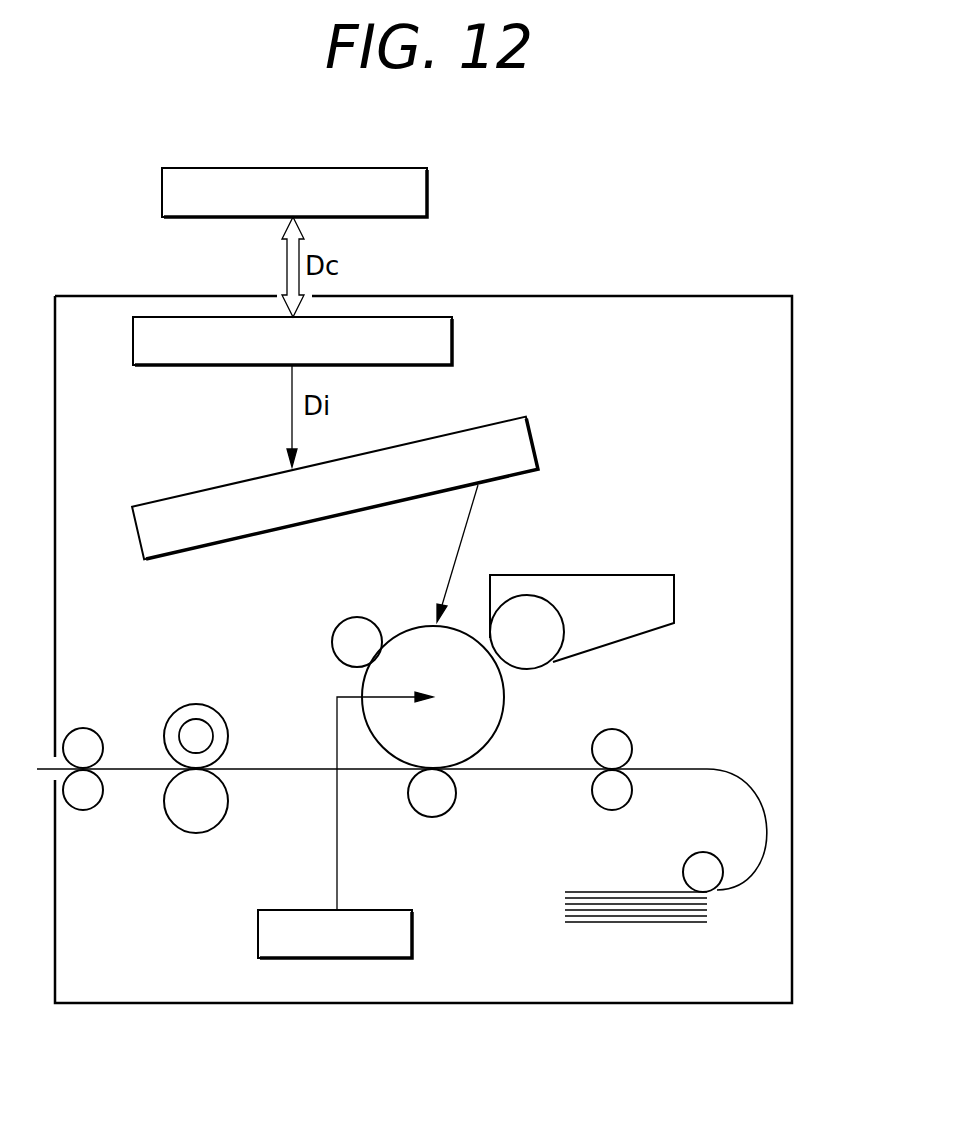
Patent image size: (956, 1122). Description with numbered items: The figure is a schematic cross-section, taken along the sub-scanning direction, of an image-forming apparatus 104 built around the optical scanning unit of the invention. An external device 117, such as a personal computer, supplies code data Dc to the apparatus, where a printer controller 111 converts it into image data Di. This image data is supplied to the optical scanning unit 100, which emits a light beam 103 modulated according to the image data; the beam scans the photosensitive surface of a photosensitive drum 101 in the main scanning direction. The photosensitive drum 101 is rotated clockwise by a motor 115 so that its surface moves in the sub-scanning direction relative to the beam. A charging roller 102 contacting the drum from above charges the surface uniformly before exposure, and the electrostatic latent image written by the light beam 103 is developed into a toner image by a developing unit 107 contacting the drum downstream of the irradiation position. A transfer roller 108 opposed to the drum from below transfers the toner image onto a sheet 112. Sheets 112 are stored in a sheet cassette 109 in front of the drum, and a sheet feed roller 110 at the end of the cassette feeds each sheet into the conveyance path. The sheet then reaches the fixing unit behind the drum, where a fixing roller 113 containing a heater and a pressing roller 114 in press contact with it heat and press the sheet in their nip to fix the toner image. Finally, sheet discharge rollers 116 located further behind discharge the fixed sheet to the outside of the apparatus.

The optical scanning unit 100 is at (185, 495).
The photosensitive drum 101 is at (493, 713).
The charging roller 102 is at (350, 622).
The light beam 103 is at (463, 537).
The image-forming apparatus 104 is at (587, 295).
The developing unit 107 is at (610, 582).
The transfer roller 108 is at (450, 793).
The sheet cassette 109 is at (630, 922).
The sheet feed roller 110 is at (707, 853).
The printer controller 111 is at (452, 341).
The sheet 112 is at (305, 767).
The fixing roller 113 is at (207, 710).
The pressing roller 114 is at (192, 827).
The motor 115 is at (375, 908).
The sheet discharge rollers 116 is at (88, 735).
The external device 117 is at (400, 165).